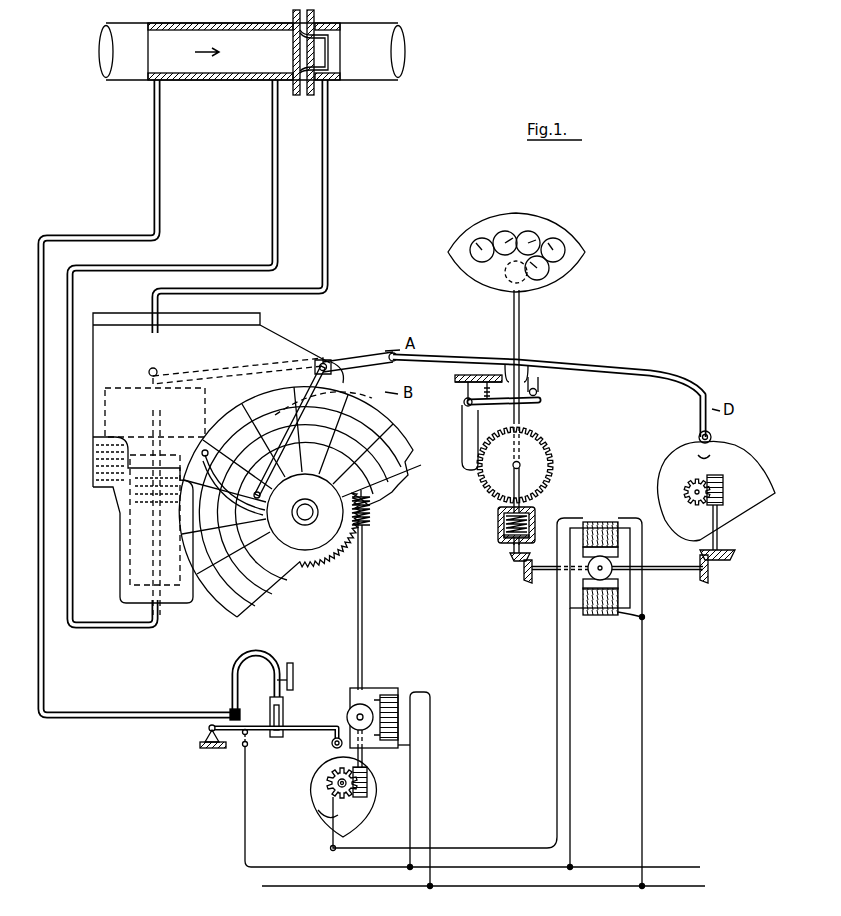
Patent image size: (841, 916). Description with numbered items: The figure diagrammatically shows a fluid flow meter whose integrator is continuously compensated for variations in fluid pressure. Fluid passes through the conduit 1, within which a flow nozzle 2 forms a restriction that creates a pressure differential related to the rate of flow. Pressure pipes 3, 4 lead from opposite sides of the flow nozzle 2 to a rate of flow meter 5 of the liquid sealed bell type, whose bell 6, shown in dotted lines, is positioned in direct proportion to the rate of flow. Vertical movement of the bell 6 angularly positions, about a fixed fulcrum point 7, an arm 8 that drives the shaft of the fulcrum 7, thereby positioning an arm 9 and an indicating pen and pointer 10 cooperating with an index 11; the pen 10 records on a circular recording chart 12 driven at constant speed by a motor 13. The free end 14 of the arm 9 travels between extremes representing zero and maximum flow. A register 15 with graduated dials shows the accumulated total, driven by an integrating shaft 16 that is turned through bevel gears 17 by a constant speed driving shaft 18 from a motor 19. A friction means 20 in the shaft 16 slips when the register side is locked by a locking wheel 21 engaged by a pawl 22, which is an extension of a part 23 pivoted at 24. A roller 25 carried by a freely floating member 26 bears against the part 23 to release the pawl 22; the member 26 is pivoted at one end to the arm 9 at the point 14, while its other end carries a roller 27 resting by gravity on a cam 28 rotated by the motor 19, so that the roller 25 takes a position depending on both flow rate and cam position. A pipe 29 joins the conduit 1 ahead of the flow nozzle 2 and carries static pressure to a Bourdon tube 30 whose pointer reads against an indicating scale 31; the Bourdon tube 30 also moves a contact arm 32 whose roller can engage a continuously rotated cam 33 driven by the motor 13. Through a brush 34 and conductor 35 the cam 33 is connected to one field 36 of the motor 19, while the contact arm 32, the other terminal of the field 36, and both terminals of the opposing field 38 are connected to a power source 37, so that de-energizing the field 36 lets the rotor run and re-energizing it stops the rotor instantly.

The conduit 1 is at (232, 80).
The flow nozzle 2 is at (309, 62).
The pressure pipe 3 is at (278, 126).
The pressure pipe 4 is at (328, 130).
The rate of flow meter 5 is at (211, 458).
The bell 6 is at (108, 440).
The fixed fulcrum point 7 is at (326, 362).
The arm 8 is at (213, 368).
The arm 9 is at (345, 362).
The indicating pen and pointer 10 is at (296, 432).
The index 11 is at (233, 482).
The circular recording chart 12 is at (300, 538).
The motor 13 is at (378, 690).
The free end of arm 14 is at (397, 362).
The register 15 is at (574, 243).
The driven integrating shaft 16 is at (520, 334).
The bevel gears 17 is at (519, 571).
The constant speed driving shaft 18 is at (549, 576).
The motor 19 is at (614, 690).
The friction means 20 is at (497, 526).
The locking wheel 21 is at (552, 479).
The pawl 22 is at (469, 470).
The part 23 is at (538, 404).
The pivot 24 is at (465, 404).
The roller 25 is at (538, 392).
The freely floating member 26 is at (585, 370).
The roller 27 is at (713, 439).
The cam 28 is at (748, 463).
The pipe 29 is at (161, 168).
The Bourdon tube 30 is at (234, 683).
The indicating scale 31 is at (293, 679).
The contact arm 32 is at (297, 729).
The cam 33 is at (312, 780).
The brush 34 is at (327, 810).
The conductor 35 is at (553, 725).
The field 36 is at (594, 521).
The power source 37 is at (500, 887).
The field 38 is at (592, 616).